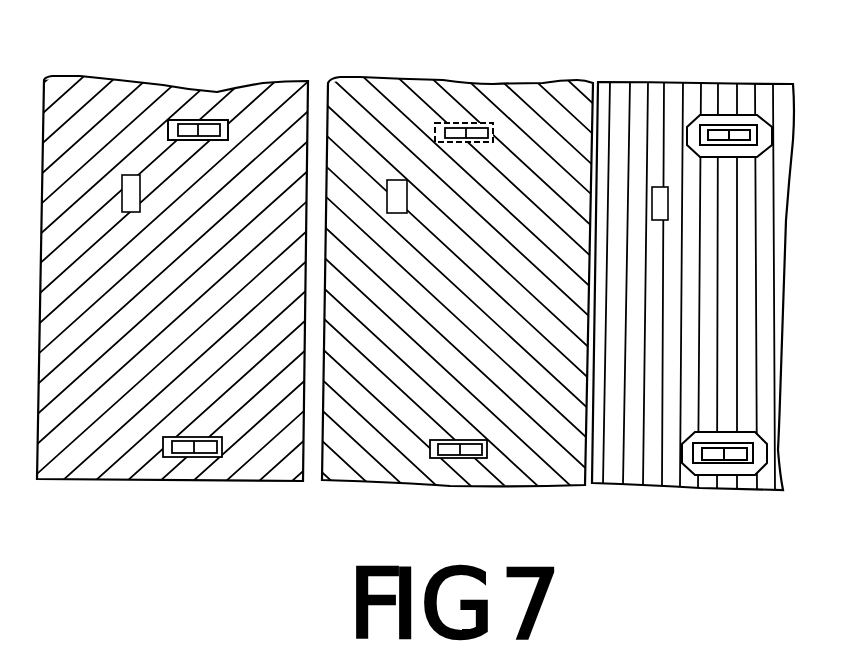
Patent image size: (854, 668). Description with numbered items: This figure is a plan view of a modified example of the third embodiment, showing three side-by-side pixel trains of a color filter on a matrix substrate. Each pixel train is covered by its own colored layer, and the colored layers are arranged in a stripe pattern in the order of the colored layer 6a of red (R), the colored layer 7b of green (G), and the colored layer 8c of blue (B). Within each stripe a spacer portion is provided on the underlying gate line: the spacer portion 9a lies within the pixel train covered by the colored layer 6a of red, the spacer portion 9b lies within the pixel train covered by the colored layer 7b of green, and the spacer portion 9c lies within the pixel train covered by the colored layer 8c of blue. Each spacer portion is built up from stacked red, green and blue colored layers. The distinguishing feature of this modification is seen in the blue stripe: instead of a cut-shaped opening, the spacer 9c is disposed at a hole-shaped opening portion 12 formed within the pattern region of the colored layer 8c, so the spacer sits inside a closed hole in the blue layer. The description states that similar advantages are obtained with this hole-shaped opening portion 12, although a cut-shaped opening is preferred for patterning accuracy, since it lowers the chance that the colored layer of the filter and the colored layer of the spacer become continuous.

The colored layer of red 6a is at (396, 295).
The colored layer of green 7b is at (427, 297).
The colored layer of blue 8c is at (693, 310).
The spacer portion 9a is at (200, 140).
The spacer portion 9b is at (472, 142).
The spacer portion 9c is at (730, 157).
The hole-shaped opening portion 12 is at (748, 127).
The red R is at (250, 470).
The green G is at (472, 474).
The blue B is at (723, 480).